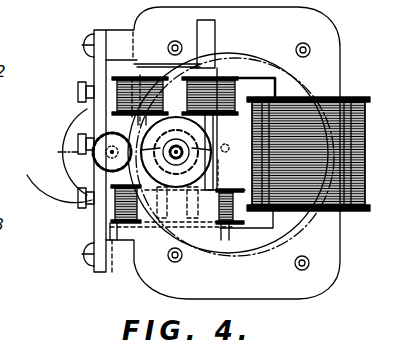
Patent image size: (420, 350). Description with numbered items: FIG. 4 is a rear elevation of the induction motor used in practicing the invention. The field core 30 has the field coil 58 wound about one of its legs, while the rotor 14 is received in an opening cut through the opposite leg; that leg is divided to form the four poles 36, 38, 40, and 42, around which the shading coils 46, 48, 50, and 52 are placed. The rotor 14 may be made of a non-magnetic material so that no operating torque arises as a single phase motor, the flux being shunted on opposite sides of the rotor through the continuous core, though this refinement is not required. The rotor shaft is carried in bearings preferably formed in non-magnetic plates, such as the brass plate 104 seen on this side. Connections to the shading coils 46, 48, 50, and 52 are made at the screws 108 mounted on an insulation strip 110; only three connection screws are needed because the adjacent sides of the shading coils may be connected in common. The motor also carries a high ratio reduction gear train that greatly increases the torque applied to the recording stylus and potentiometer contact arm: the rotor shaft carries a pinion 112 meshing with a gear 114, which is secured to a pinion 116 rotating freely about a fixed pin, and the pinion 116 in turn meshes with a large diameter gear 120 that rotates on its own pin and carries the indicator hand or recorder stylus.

The field core 30 is at (336, 42).
The pole 36 is at (134, 64).
The pole 38 is at (217, 125).
The rotor 14 is at (233, 142).
The pole 40 is at (232, 171).
The pole 42 is at (74, 188).
The shading coil 46 is at (128, 100).
The shading coil 48 is at (239, 154).
The shading coil 50 is at (236, 212).
The shading coil 52 is at (112, 212).
The field coil 58 is at (356, 142).
The brass plate 104 is at (147, 232).
The screws 108 is at (77, 92).
The insulation strip 110 is at (99, 270).
The pinion 112 is at (176, 152).
The gear 114 is at (67, 126).
The pinion 116 is at (82, 113).
The large diameter gear 120 is at (308, 82).